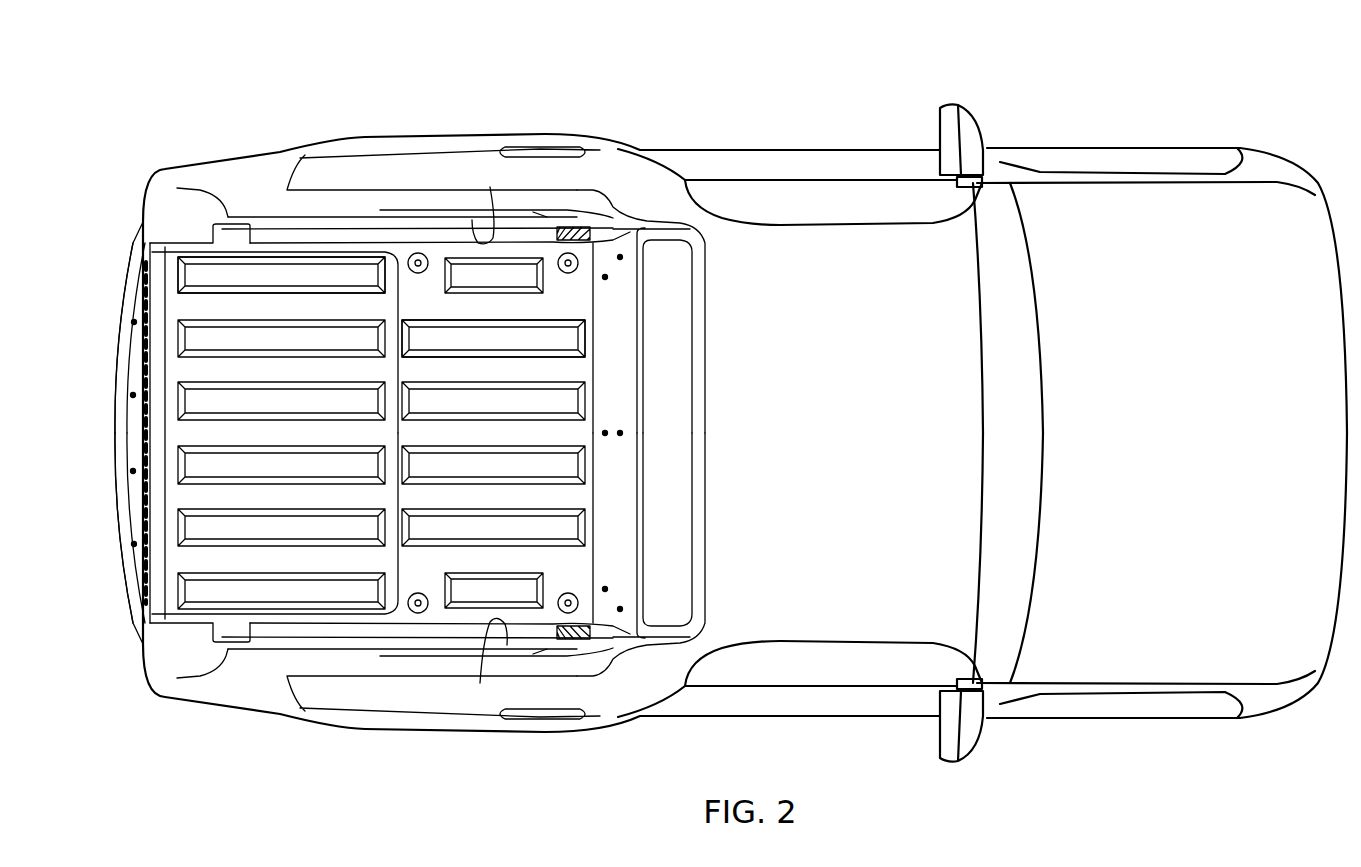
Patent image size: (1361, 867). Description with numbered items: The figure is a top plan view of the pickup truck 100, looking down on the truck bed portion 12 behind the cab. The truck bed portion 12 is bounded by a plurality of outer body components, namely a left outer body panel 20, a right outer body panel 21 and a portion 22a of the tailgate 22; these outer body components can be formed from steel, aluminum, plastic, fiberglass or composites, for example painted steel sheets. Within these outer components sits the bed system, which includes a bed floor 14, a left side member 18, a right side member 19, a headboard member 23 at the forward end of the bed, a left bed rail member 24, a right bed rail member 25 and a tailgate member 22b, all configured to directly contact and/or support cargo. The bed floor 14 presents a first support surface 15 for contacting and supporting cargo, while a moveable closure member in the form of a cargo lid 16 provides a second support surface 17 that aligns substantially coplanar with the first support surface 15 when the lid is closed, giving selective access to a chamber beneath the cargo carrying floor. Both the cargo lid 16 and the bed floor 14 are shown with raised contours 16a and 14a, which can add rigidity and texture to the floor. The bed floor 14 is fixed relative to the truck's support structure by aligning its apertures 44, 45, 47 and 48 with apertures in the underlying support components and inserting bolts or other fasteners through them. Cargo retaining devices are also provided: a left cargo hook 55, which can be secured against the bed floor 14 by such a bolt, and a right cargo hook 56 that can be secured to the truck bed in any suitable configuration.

The pickup truck 100 is at (1040, 117).
The truck bed portion 12 is at (540, 114).
The bed floor 14 is at (556, 498).
The raised contour 14a is at (497, 338).
The first support surface 15 is at (506, 445).
The cargo lid 16 is at (178, 557).
The raised contour 16a is at (290, 268).
The second support surface 17 is at (281, 445).
The left side member 18 is at (486, 200).
The right side member 19 is at (486, 662).
The left outer body panel 20 is at (402, 177).
The right outer body panel 21 is at (400, 703).
The tailgate 22 is at (107, 510).
The tailgate outer portion 22a is at (115, 352).
The tailgate member 22b is at (170, 320).
The headboard member 23 is at (617, 561).
The left bed rail member 24 is at (262, 200).
The right bed rail member 25 is at (260, 667).
The aperture 44 is at (568, 273).
The aperture 45 is at (418, 273).
The aperture 47 is at (568, 593).
The aperture 48 is at (418, 593).
The left cargo hook 55 is at (582, 243).
The right cargo hook 56 is at (588, 605).